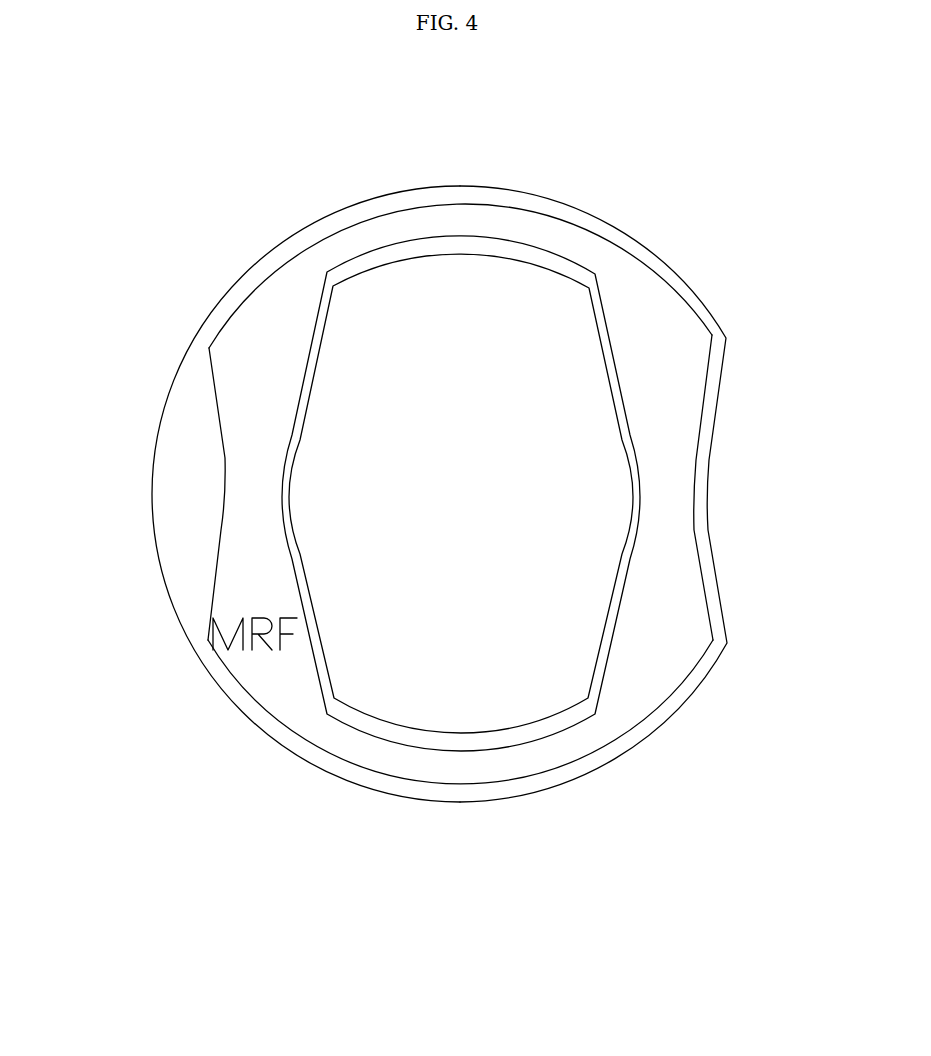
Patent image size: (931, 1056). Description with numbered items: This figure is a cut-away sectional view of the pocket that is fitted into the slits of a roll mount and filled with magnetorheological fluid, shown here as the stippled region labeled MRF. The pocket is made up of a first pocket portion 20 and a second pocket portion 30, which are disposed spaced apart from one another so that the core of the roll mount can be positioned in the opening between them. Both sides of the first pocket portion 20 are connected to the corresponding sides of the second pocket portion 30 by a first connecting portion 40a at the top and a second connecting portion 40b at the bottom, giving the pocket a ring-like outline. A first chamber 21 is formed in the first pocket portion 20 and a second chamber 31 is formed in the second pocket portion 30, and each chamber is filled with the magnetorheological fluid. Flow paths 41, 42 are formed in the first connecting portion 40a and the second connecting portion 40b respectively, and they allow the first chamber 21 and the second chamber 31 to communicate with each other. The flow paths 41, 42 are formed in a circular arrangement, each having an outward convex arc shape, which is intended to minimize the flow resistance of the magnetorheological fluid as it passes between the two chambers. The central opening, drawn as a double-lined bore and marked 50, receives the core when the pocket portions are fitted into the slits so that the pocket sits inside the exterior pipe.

The first pocket portion 20 is at (186, 531).
The first chamber 21 is at (262, 470).
The second pocket portion 30 is at (710, 407).
The second chamber 31 is at (672, 377).
The first connecting portion 40a is at (410, 189).
The second connecting portion 40b is at (446, 801).
The flow path 41 is at (437, 224).
The flow path 42 is at (498, 762).
The shaft bore / inner sleeve 50 is at (466, 311).